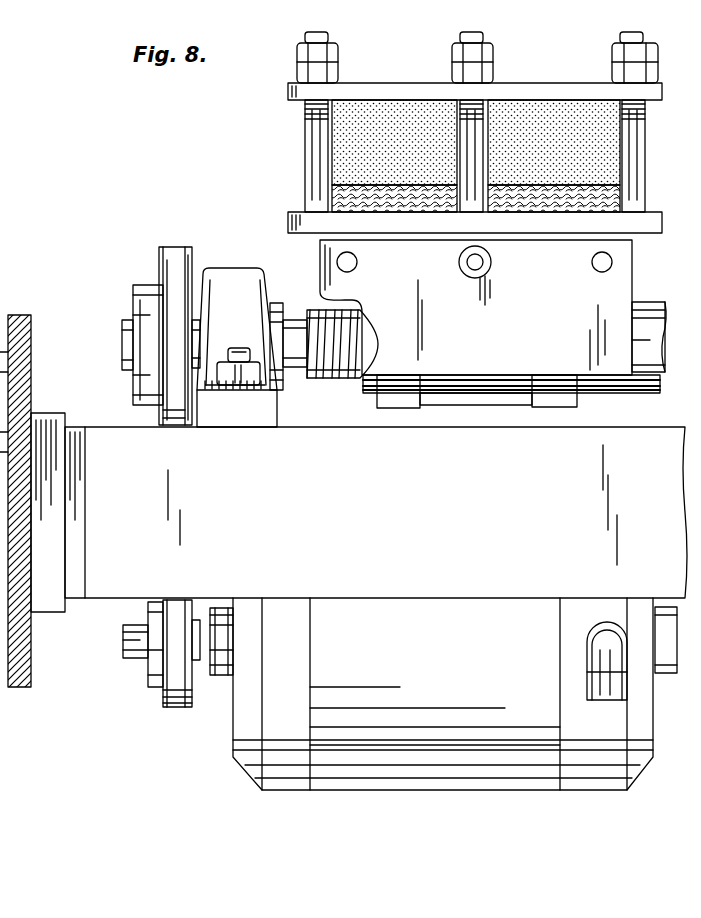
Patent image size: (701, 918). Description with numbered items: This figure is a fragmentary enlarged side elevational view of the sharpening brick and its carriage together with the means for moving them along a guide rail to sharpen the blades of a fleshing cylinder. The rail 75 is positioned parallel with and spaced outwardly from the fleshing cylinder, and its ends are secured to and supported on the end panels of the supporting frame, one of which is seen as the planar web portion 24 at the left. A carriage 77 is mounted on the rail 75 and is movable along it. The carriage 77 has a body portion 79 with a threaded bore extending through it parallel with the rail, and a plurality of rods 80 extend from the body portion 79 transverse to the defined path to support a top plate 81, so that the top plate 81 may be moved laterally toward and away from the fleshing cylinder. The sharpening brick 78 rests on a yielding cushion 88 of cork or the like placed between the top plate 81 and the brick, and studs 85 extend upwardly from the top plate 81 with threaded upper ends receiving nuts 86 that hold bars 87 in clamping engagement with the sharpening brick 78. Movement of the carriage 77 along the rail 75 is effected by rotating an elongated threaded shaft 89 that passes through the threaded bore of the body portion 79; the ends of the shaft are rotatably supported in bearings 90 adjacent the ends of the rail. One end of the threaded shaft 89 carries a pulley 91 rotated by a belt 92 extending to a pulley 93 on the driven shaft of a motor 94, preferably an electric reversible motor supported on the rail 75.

The planar web portion 24 is at (31, 345).
The rail 75 is at (610, 425).
The carriage 77 is at (632, 243).
The sharpening brick 78 is at (348, 140).
The body portion 79 is at (612, 297).
The rods 80 is at (347, 266).
The top plate 81 is at (655, 212).
The studs 85 is at (325, 32).
The nuts 86 is at (342, 60).
The bars 87 is at (545, 90).
The cushion 88 is at (527, 205).
The elongated threaded shaft 89 is at (295, 318).
The bearing 90 is at (258, 272).
The pulley 91 is at (160, 255).
The belt 92 is at (175, 418).
The pulley 93 is at (165, 703).
The motor 94 is at (368, 778).